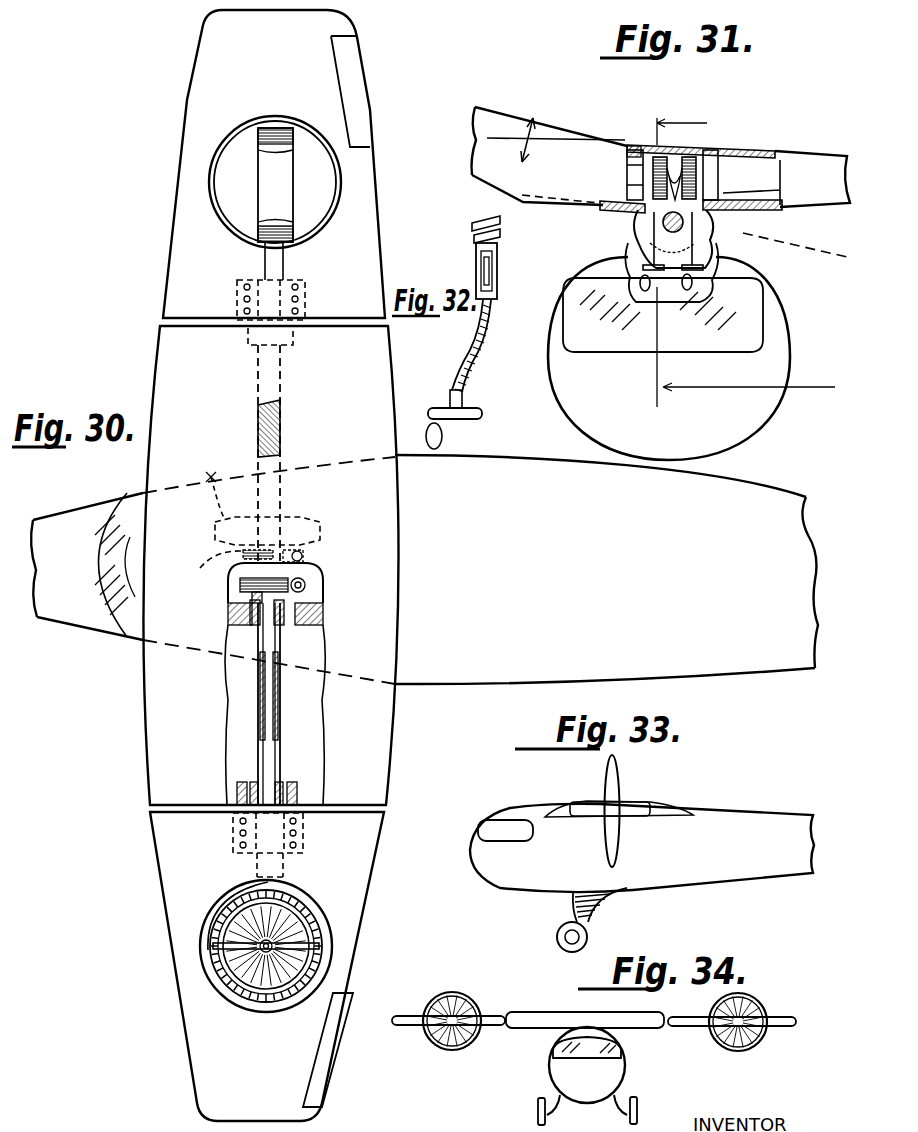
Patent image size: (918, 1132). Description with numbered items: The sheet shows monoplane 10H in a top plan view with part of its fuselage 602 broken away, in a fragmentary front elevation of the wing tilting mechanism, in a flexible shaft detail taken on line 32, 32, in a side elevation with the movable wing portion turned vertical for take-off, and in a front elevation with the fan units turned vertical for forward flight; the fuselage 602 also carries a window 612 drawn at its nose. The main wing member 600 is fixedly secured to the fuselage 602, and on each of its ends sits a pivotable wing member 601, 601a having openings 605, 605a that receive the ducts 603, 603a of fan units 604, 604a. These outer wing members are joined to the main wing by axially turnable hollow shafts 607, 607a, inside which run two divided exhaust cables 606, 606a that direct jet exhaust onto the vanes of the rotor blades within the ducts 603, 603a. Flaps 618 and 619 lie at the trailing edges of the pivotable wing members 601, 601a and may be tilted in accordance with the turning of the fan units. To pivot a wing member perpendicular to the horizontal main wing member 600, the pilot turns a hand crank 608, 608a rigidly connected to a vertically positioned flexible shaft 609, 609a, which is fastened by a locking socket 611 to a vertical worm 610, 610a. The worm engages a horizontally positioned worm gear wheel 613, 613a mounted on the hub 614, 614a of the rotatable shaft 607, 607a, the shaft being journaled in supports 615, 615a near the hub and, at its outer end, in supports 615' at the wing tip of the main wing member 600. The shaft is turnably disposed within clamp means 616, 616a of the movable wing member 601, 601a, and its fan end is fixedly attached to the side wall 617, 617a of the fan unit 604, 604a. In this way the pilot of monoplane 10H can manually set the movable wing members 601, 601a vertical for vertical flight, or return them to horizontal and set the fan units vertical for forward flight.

In FIG. 30, the main wing member 600 is at (142, 703).
In FIG. 31, the main wing member 600 is at (817, 150).
In FIG. 33, the main wing member 600 is at (660, 808).
In FIG. 34, the main wing member 600 is at (527, 1013).
In FIG. 30, the pivotable wing member 601 is at (193, 142).
In FIG. 34, the pivotable wing member 601 is at (398, 1015).
In FIG. 30, the pivotable wing member 601a is at (203, 1063).
In FIG. 33, the pivotable wing member 601a is at (613, 787).
In FIG. 34, the pivotable wing member 601a is at (778, 1018).
In FIG. 30, the fuselage 602 is at (480, 667).
In FIG. 31, the fuselage 602 is at (815, 292).
In FIG. 33, the fuselage 602 is at (510, 873).
In FIG. 34, the fuselage 602 is at (580, 1105).
In FIG. 30, the duct 603 is at (260, 192).
In FIG. 30, the duct 603a is at (220, 977).
In FIG. 30, the fan unit 604 is at (320, 190).
In FIG. 34, the fan unit 604 is at (453, 990).
In FIG. 30, the fan unit 604a is at (308, 903).
In FIG. 33, the fan unit 604a is at (583, 800).
In FIG. 34, the fan unit 604a is at (745, 992).
In FIG. 30, the opening 605 is at (337, 217).
In FIG. 30, the opening 605a is at (333, 930).
In FIG. 30, the exhaust cable 606 is at (258, 428).
In FIG. 30, the exhaust cable 606a is at (273, 720).
In FIG. 30, the hollow shaft 607 is at (258, 378).
In FIG. 31, the hollow shaft 607 is at (620, 173).
In FIG. 30, the hollow shaft 607a is at (278, 757).
In FIG. 31, the hollow shaft 607a is at (733, 177).
In FIG. 31, the hand crank 608 is at (645, 280).
In FIG. 32, the hand crank 608 is at (492, 447).
In FIG. 31, the hand crank 608a is at (690, 280).
In FIG. 32, the hand crank 608a is at (481, 436).
In FIG. 31, the flexible shaft 609 is at (645, 246).
In FIG. 32, the flexible shaft 609 is at (493, 390).
In FIG. 31, the flexible shaft 609a is at (703, 235).
In FIG. 32, the flexible shaft 609a is at (493, 386).
In FIG. 30, the worm 610 is at (303, 556).
In FIG. 32, the worm 610 is at (508, 250).
In FIG. 30, the worm 610a is at (305, 585).
In FIG. 32, the worm 610a is at (511, 241).
In FIG. 32, the locking socket 611 is at (475, 260).
In FIG. 30, the window 612 is at (127, 520).
In FIG. 31, the window 612 is at (717, 337).
In FIG. 30, the worm gear wheel 613 is at (295, 522).
In FIG. 31, the worm gear wheel 613 is at (647, 162).
In FIG. 30, the worm gear wheel 613a is at (300, 597).
In FIG. 31, the worm gear wheel 613a is at (693, 140).
In FIG. 30, the hub 614 is at (206, 570).
In FIG. 31, the hub 614 is at (635, 173).
In FIG. 30, the hub 614a is at (280, 625).
In FIG. 31, the hub 614a is at (707, 155).
In FIG. 30, the support 615 is at (206, 485).
In FIG. 31, the support 615 is at (633, 150).
In FIG. 30, the support 615' is at (299, 573).
In FIG. 32, the support 615' is at (416, 353).
In FIG. 30, the bearing flange 615a is at (305, 611).
In FIG. 30, the clamp means 616 is at (230, 835).
In FIG. 30, the clamp means 616a is at (237, 293).
In FIG. 30, the side wall 617 is at (260, 873).
In FIG. 30, the side wall 617a is at (243, 247).
In FIG. 30, the flap 618 is at (353, 80).
In FIG. 30, the flap 619 is at (327, 1060).
In FIG. 30, the monoplane 10H is at (100, 638).
In FIG. 31, the monoplane 10H is at (823, 327).
In FIG. 33, the monoplane 10H is at (474, 873).
In FIG. 34, the monoplane 10H is at (630, 1068).
In FIG. 31, the section line 32 is at (746, 261).